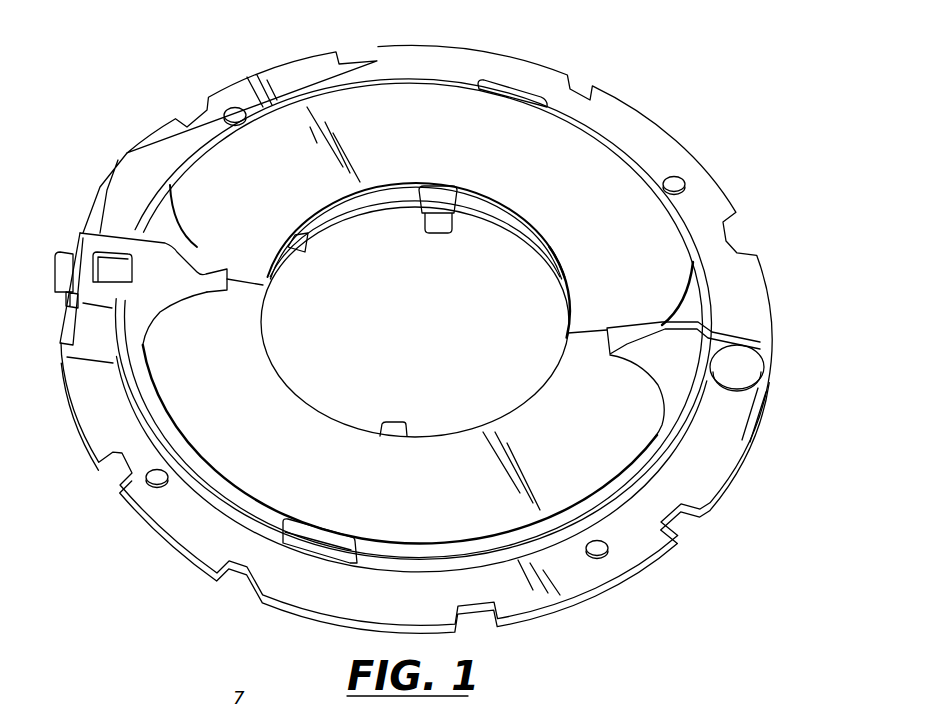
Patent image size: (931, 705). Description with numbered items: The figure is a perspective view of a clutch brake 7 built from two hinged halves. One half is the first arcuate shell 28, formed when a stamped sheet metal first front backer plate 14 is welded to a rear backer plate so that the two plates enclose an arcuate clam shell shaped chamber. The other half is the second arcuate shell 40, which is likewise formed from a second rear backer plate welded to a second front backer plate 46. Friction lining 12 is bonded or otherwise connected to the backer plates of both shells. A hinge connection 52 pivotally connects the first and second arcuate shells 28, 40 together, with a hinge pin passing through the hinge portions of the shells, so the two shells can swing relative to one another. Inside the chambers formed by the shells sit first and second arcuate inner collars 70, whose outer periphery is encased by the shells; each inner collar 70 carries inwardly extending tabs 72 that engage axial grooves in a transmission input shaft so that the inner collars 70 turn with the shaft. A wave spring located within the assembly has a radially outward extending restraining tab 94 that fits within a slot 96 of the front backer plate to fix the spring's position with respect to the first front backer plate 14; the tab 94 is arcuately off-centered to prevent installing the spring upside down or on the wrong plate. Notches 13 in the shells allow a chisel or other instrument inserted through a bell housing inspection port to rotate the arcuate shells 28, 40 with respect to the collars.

The clutch brake 7 is at (172, 71).
The friction lining 12 is at (593, 160).
The notch 13 is at (583, 98).
The first front backer plate 14 is at (227, 493).
The first arcuate shell 28 is at (67, 397).
The second arcuate shell 40 is at (403, 42).
The second front backer plate 46 is at (293, 97).
The hinge connection 52 is at (745, 362).
The inner collar 70 is at (353, 218).
The tab 72 is at (428, 233).
The restraining tab 94 is at (330, 540).
The slot 96 is at (288, 540).